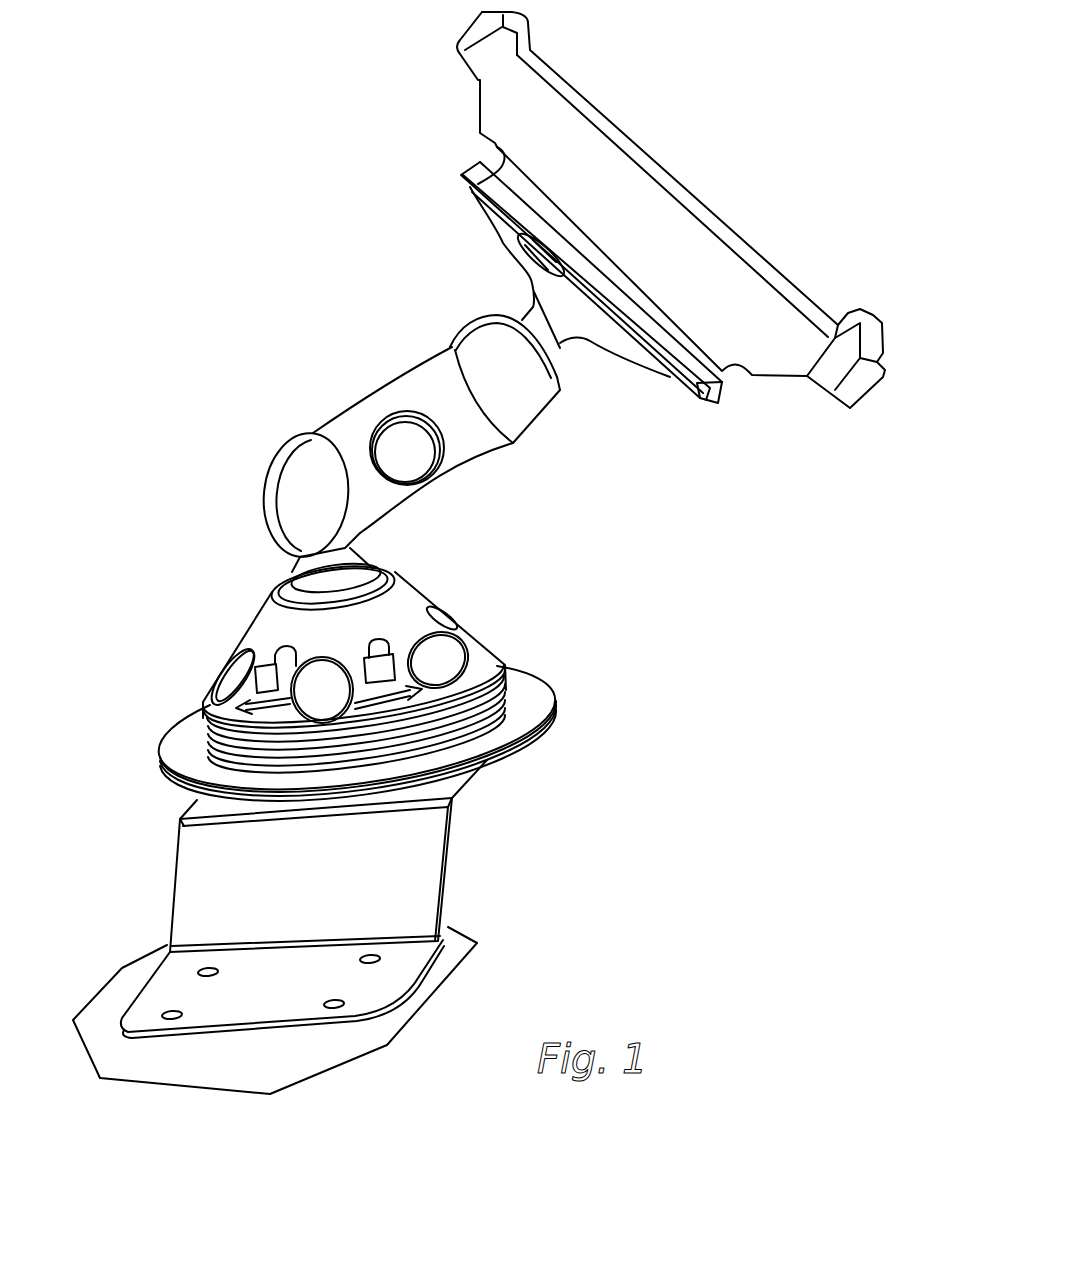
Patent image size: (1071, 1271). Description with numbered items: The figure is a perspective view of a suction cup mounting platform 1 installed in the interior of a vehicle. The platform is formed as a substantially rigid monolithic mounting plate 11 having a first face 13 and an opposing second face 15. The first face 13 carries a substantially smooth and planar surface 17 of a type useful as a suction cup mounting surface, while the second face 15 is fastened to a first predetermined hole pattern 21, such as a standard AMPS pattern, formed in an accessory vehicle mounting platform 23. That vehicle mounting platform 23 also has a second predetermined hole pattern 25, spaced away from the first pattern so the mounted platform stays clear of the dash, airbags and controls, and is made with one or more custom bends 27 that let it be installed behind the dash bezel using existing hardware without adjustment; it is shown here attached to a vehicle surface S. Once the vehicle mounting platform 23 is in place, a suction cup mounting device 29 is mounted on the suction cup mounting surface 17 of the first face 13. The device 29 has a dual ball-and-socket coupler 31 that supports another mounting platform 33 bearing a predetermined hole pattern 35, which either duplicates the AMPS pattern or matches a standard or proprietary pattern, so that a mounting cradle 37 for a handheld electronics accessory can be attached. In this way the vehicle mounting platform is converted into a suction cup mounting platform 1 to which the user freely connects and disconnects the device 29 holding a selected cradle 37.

The suction cup mounting platform 1 is at (479, 553).
The mounting plate 11 is at (555, 700).
The first face 13 is at (543, 683).
The second face 15 is at (523, 740).
The suction cup mounting surface 17 is at (513, 678).
The first predetermined hole pattern 21 is at (492, 781).
The accessory vehicle mounting platform 23 is at (450, 848).
The second predetermined hole pattern 25 is at (377, 963).
The custom bends 27 is at (178, 817).
The suction cup mounting device 29 is at (253, 623).
The dual ball-and-socket coupler 31 is at (370, 403).
The mounting platform 33 is at (493, 240).
The predetermined hole pattern 35 is at (670, 377).
The mounting cradle 37 is at (773, 265).
The mounting surface S is at (372, 1033).